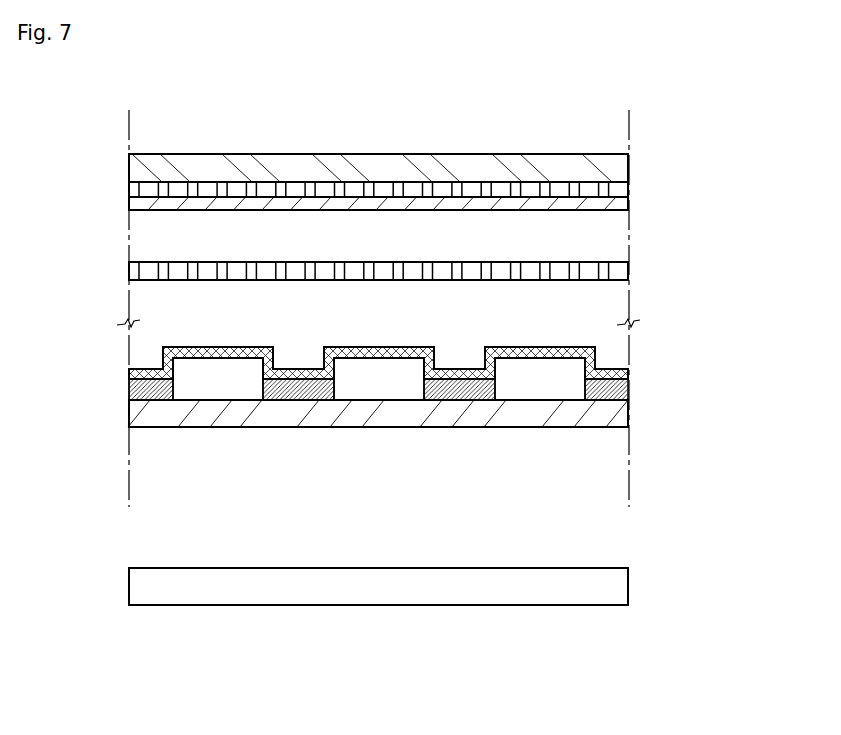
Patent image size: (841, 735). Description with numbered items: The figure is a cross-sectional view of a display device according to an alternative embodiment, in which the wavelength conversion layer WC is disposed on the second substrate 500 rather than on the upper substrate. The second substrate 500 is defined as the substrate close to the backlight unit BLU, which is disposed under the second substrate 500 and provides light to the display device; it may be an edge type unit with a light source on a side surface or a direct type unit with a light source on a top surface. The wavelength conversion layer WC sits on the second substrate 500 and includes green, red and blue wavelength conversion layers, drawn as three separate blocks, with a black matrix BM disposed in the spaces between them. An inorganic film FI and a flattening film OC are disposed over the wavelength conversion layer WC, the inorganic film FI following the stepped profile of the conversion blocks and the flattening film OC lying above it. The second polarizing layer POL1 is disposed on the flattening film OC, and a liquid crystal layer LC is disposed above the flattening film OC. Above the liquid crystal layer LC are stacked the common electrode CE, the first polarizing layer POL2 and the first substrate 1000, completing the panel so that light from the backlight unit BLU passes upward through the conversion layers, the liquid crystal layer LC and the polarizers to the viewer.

The first substrate 1000 is at (625, 167).
The first polarizing layer POL2 is at (129, 191).
The common electrode CE is at (622, 206).
The liquid crystal layer LC is at (622, 238).
The second polarizing layer POL1 is at (129, 271).
The flattening film OC is at (615, 305).
The inorganic film FI is at (597, 354).
The black matrix BM is at (129, 391).
The second substrate 500 is at (627, 414).
The wavelength conversion layer WC is at (543, 507).
The backlight unit BLU is at (378, 586).